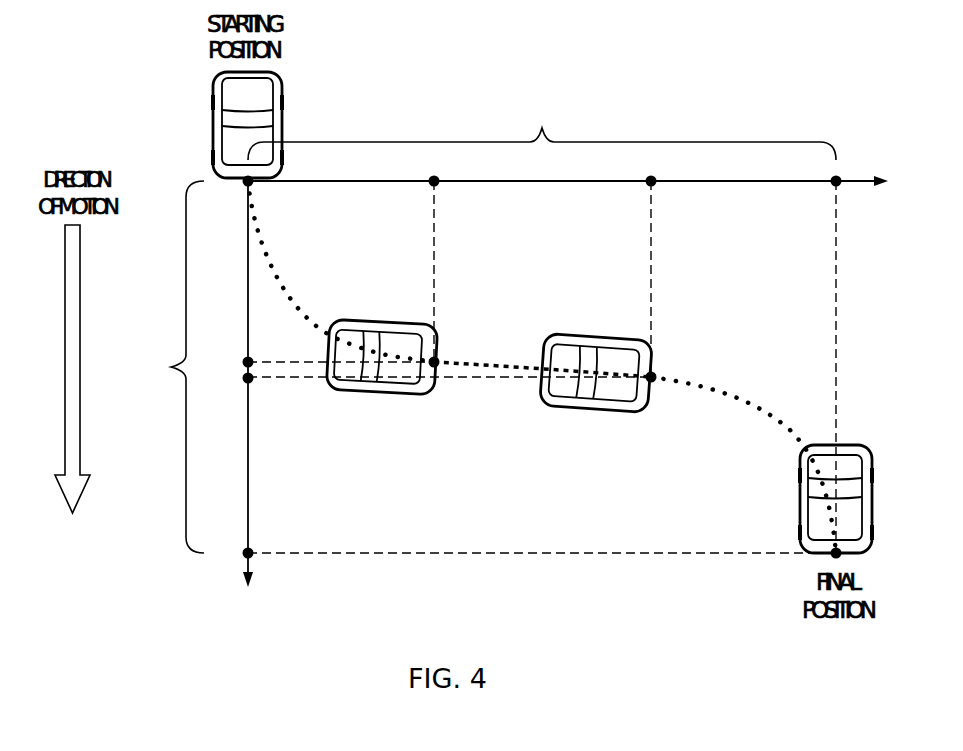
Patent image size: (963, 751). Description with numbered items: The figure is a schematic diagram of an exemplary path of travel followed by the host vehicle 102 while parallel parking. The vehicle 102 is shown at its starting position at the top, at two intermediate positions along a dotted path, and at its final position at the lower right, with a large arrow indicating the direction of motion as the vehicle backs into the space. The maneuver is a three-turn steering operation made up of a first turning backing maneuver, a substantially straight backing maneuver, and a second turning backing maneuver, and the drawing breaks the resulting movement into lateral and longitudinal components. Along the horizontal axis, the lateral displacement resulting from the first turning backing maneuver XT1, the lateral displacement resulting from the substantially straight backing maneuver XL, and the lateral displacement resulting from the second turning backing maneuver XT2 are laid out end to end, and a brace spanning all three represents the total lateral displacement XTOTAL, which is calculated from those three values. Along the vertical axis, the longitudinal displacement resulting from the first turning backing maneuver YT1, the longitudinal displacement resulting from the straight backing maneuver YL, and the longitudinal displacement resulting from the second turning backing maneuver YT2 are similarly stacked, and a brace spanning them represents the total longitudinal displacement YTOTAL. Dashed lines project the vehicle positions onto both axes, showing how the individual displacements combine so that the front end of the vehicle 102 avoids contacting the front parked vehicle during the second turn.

The vehicle 102 is at (542, 306).
The lateral displacement resulting from first turning backing maneuver XT1 is at (341, 166).
The lateral displacement resulting from substantially straight backing maneuver XL is at (542, 164).
The lateral displacement resulting from second turning backing maneuver XT2 is at (743, 164).
The total lateral displacement XTOTAL is at (542, 123).
The longitudinal displacement resulting from first turning backing maneuver YT1 is at (228, 271).
The longitudinal displacement resulting from substantially straight backing maneuver YL is at (430, 363).
The longitudinal displacement resulting from second turning backing maneuver YT2 is at (228, 465).
The total longitudinal displacement YTOTAL is at (171, 367).